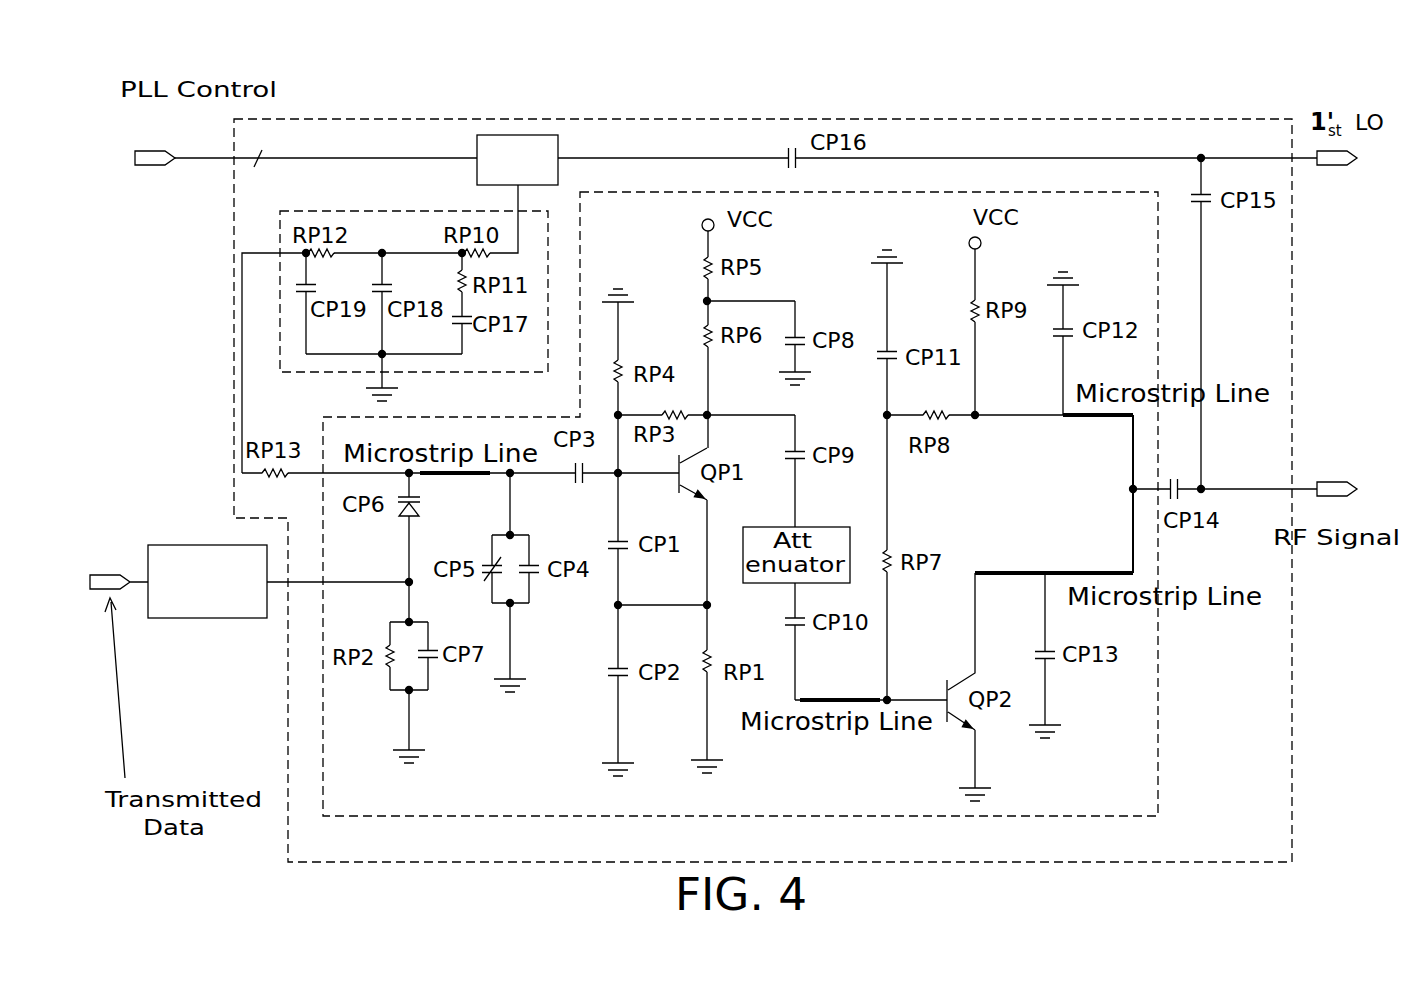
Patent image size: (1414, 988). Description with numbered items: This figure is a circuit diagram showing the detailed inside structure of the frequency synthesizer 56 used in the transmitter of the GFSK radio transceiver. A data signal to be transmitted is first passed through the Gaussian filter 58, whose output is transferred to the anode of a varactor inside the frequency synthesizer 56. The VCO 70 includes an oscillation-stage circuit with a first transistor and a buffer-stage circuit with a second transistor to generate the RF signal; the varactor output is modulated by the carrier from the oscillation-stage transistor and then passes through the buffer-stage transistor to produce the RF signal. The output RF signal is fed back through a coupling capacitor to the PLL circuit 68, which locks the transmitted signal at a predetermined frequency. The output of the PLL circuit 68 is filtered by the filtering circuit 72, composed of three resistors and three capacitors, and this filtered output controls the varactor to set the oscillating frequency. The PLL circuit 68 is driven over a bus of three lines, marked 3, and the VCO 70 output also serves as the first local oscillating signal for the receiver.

The frequency synthesizer 56 is at (1292, 365).
The Gaussian filter 58 is at (217, 618).
The PLL circuit 68 is at (558, 148).
The VCO 70 is at (952, 190).
The filtering circuit 72 is at (280, 234).
The 3-line control bus 3 is at (256, 168).